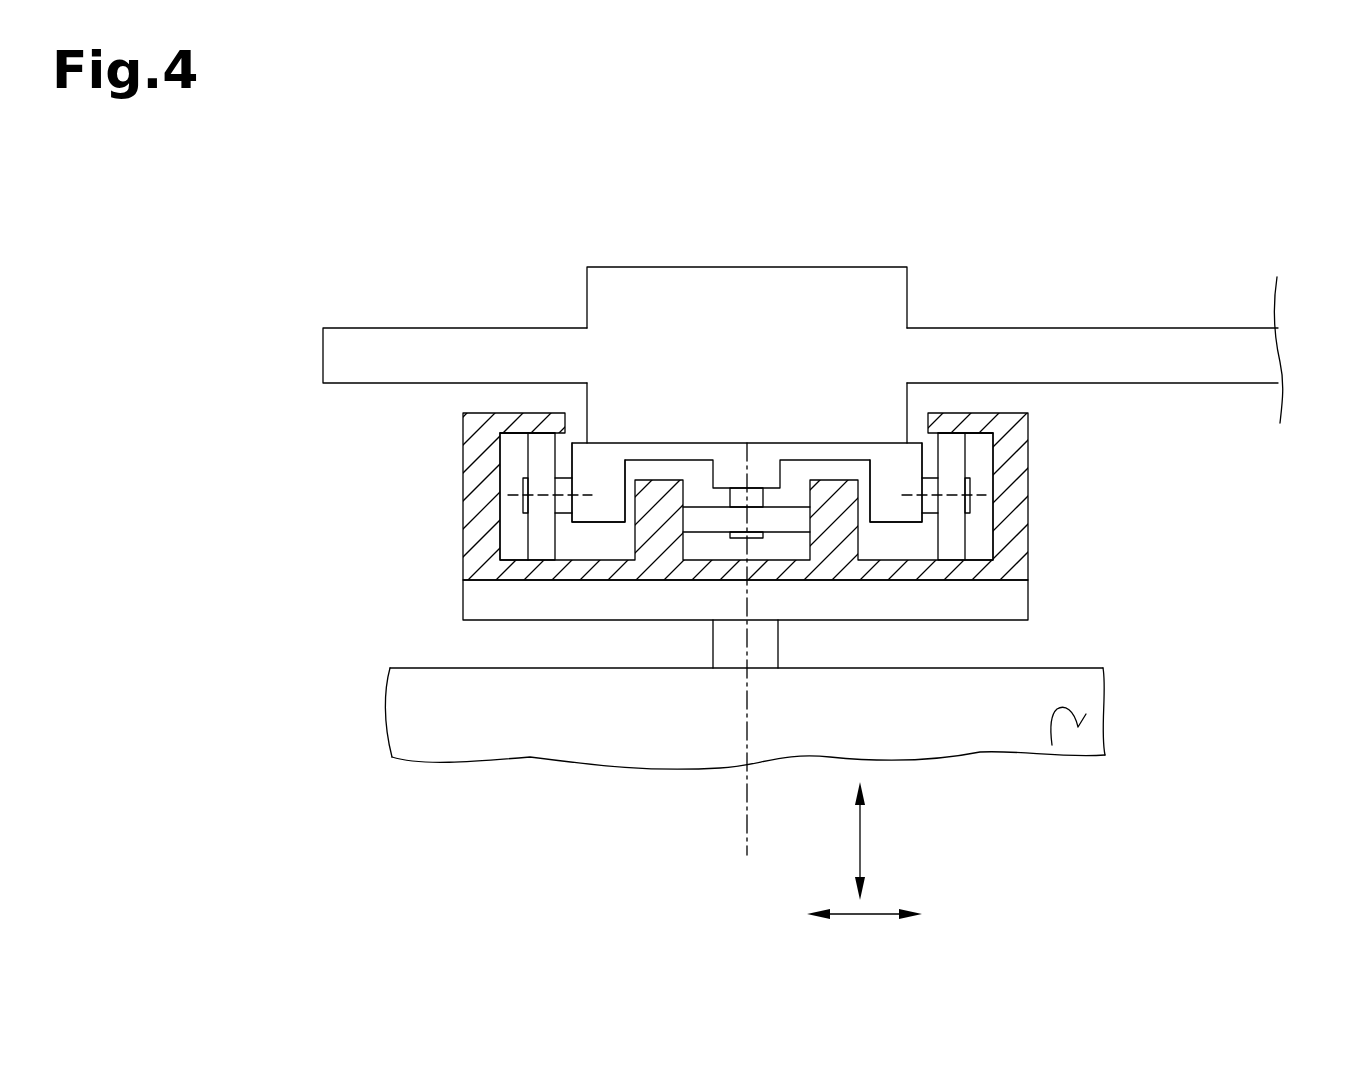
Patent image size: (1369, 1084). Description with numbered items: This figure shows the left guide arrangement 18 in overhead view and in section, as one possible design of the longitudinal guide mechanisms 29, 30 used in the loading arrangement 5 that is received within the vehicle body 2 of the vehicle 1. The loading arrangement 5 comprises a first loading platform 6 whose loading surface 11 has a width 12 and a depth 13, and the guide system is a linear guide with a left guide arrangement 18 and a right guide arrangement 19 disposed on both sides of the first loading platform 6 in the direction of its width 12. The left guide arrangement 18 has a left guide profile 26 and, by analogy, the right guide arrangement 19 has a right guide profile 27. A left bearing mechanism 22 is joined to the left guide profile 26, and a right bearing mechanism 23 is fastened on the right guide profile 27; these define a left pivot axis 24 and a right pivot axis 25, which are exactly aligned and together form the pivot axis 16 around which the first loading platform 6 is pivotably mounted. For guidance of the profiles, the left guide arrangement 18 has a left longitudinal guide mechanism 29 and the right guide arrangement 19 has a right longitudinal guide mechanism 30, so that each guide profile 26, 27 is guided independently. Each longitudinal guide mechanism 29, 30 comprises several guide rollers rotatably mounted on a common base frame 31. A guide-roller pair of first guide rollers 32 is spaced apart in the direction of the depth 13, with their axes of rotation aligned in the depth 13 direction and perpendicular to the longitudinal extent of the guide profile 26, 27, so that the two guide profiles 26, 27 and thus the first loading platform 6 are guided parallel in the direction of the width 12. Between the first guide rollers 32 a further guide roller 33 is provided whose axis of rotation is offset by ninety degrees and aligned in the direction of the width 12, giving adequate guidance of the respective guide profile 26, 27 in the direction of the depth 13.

The vehicle 1 is at (495, 145).
The vehicle body 2 is at (607, 317).
The loading arrangement 5 is at (1188, 628).
The first loading platform 6 is at (973, 703).
The loading surface 11 is at (1052, 745).
The width 12 is at (861, 849).
The depth 13 is at (873, 927).
The pivot axis 16 is at (603, 677).
The left guide arrangement 18 is at (567, 110).
The right guide arrangement 19 is at (615, 178).
The left bearing mechanism 22 is at (655, 754).
The right bearing mechanism 23 is at (597, 598).
The left pivot axis 24 is at (603, 677).
The right pivot axis 25 is at (747, 818).
The left guide profile 26 is at (723, 571).
The right guide profile 27 is at (487, 540).
The left longitudinal guide mechanism 29 is at (461, 369).
The right longitudinal guide mechanism 30 is at (602, 477).
The base frame 31 is at (898, 482).
The first guide rollers 32 is at (540, 467).
The further guide roller 33 is at (775, 522).